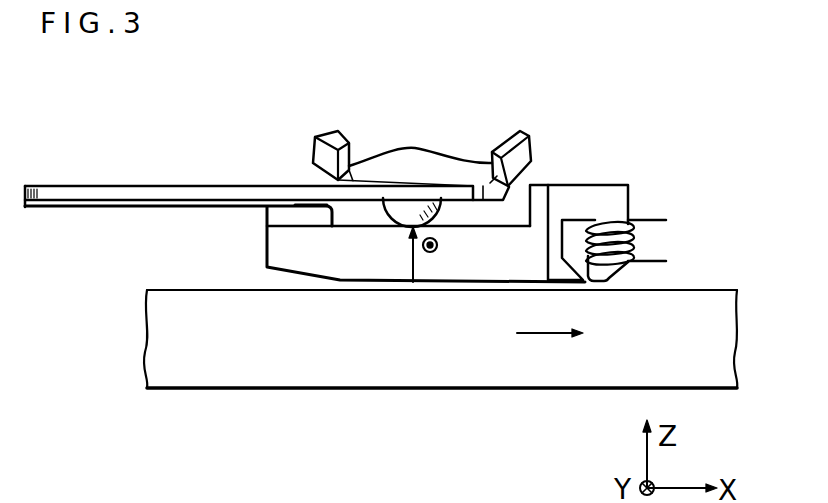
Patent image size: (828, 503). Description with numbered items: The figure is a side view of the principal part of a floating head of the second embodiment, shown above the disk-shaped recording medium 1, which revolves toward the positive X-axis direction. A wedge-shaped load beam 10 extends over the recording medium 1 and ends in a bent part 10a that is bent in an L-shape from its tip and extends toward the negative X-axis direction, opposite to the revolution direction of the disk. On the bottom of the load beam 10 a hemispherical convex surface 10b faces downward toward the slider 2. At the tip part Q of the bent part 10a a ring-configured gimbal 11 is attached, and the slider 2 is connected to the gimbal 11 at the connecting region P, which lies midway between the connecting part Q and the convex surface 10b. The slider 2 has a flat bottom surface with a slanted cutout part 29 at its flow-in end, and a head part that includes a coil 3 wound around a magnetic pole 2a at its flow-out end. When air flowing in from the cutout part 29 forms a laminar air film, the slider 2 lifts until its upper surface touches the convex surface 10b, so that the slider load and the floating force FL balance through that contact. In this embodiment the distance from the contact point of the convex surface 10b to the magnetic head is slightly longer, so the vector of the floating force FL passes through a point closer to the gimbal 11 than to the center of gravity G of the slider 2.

The disk-shaped recording medium 1 is at (243, 377).
The slider 2 is at (541, 196).
The magnetic pole 2a is at (605, 275).
The coil 3 is at (618, 222).
The load beam 10 is at (385, 170).
The bent part 10a is at (173, 190).
The convex surface 10b is at (424, 206).
The gimbal 11 is at (138, 209).
The cutout part 29 is at (285, 277).
The connecting region P is at (292, 214).
The connecting part Q is at (47, 209).
The slider floating force FL is at (411, 258).
The center of gravity G is at (437, 250).